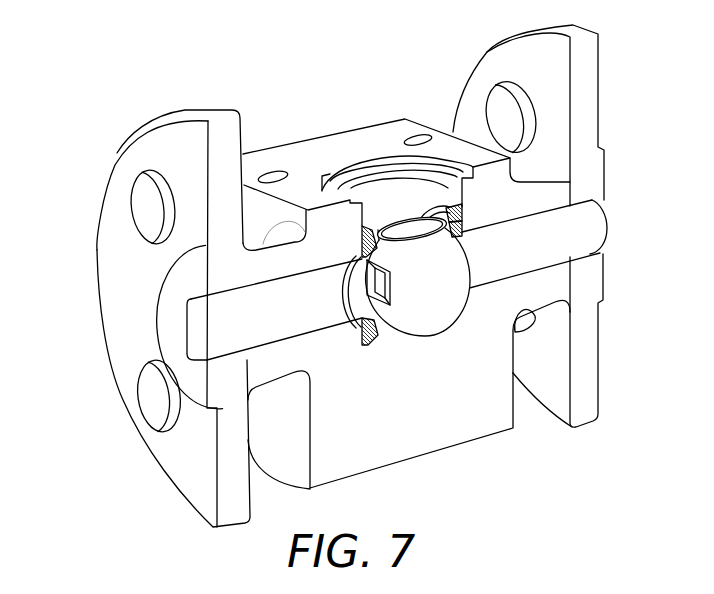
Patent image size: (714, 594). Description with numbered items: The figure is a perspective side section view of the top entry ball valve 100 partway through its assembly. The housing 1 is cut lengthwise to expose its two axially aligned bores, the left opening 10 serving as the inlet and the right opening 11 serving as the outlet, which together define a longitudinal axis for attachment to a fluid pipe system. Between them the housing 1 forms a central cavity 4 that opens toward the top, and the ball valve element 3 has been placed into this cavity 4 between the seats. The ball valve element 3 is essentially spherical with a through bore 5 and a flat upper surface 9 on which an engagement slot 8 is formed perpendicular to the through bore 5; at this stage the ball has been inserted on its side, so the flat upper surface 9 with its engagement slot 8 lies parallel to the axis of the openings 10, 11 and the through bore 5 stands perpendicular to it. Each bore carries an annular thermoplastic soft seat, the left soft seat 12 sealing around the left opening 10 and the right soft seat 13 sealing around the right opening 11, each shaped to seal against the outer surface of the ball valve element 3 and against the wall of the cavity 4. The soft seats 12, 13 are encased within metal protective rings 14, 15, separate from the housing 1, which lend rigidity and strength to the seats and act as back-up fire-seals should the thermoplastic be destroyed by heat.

The top entry ball valve 100 is at (242, 62).
The housing 1 is at (460, 435).
The ball valve element 3 is at (443, 312).
The central cavity 4 is at (387, 184).
The through bore 5 is at (417, 225).
The engagement slot 8 is at (393, 307).
The flat upper surface 9 is at (402, 282).
The left opening 10 is at (202, 325).
The right opening 11 is at (580, 230).
The left soft seat 12 is at (363, 323).
The right soft seat 13 is at (460, 230).
The protective ring 14 is at (370, 347).
The protective ring 15 is at (460, 207).